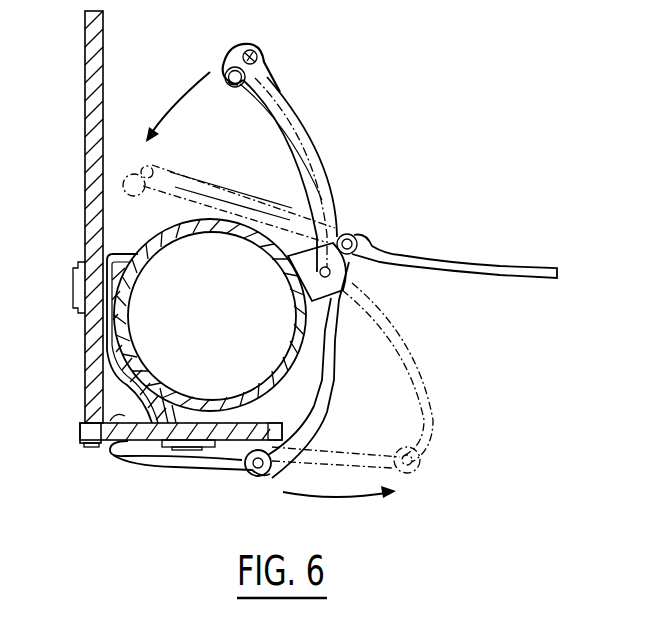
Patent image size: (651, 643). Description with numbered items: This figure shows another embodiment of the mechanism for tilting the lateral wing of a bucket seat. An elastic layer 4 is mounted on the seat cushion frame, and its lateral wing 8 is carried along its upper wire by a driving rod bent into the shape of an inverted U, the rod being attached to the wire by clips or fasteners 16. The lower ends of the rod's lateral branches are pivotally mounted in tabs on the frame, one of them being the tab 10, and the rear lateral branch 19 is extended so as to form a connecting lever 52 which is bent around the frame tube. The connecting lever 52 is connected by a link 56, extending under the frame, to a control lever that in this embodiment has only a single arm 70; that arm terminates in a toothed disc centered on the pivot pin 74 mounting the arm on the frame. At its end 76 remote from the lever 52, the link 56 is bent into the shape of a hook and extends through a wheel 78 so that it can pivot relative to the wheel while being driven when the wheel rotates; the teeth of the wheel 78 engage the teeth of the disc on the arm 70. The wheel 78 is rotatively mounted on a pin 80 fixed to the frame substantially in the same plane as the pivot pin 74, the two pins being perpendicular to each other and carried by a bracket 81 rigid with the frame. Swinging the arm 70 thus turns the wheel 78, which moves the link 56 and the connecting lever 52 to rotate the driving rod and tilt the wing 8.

The elastic layer 4 is at (503, 268).
The lateral wing 8 is at (268, 73).
The tab 10 is at (358, 268).
The clips or fasteners 16 is at (238, 58).
The lateral branch 19 is at (315, 140).
The connecting lever 52 is at (328, 379).
The link 56 is at (148, 468).
The single arm 70 is at (92, 61).
The pivot pin 74 is at (72, 286).
The hook end of link 76 is at (88, 441).
The wheel 78 is at (122, 452).
The pin 80 is at (177, 450).
The bracket 81 is at (130, 375).